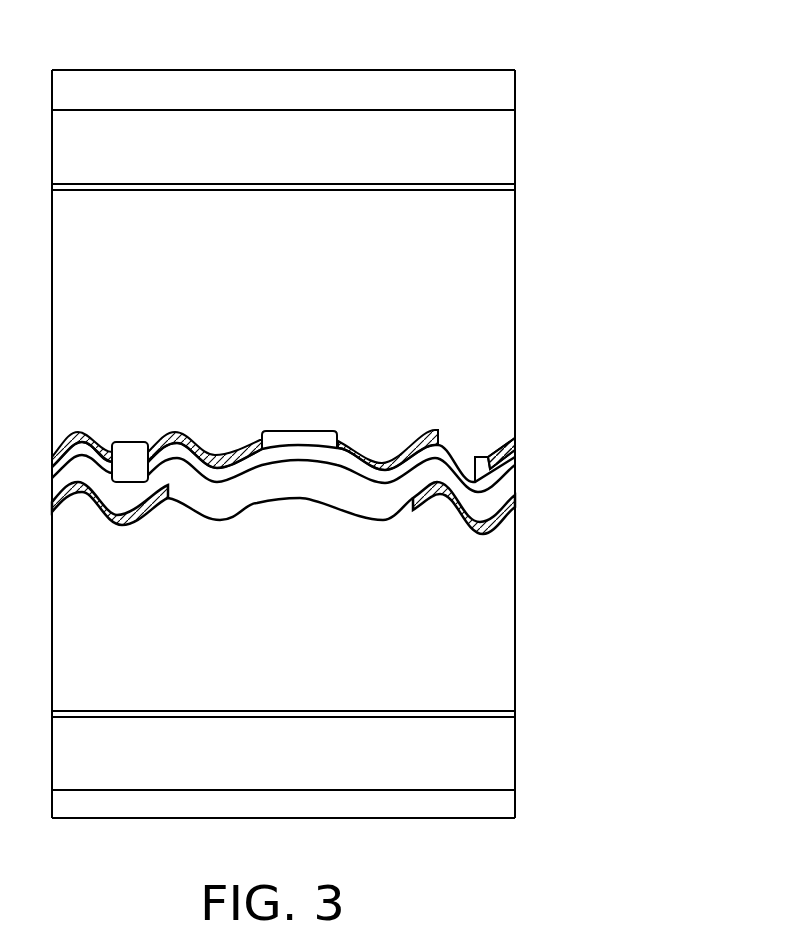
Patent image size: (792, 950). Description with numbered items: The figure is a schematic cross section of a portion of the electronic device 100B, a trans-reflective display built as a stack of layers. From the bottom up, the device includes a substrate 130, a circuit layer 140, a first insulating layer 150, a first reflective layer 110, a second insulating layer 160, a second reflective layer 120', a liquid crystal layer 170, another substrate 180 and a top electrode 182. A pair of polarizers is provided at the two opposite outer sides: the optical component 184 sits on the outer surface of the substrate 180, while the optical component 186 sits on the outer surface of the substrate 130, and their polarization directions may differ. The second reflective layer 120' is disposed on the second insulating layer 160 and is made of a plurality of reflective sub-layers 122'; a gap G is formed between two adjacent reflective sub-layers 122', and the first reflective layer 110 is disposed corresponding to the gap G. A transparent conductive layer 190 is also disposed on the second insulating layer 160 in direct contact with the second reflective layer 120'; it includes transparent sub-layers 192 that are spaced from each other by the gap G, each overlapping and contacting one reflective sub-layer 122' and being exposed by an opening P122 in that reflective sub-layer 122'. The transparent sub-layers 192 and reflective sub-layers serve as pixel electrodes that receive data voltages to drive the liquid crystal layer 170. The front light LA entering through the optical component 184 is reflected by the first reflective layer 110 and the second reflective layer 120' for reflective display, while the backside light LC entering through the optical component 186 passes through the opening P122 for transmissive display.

The optical component 184 is at (505, 89).
The substrate 180 is at (505, 146).
The top electrode 182 is at (505, 189).
The liquid crystal layer 170 is at (505, 319).
The transparent sub-layers 192 is at (345, 462).
The transparent conductive layer 190 is at (508, 463).
The reflective sub-layers 122' is at (495, 429).
The second reflective layer 120' is at (501, 453).
The second insulating layer 160 is at (505, 483).
The first reflective layer 110 is at (508, 518).
The first insulating layer 150 is at (505, 631).
The circuit layer 140 is at (505, 716).
The substrate 130 is at (505, 758).
The optical component 186 is at (505, 803).
The gap G is at (130, 442).
The opening P122 is at (300, 431).
The front light LA is at (180, 18).
The backside light LC is at (119, 828).
The electronic device 100B is at (755, 864).